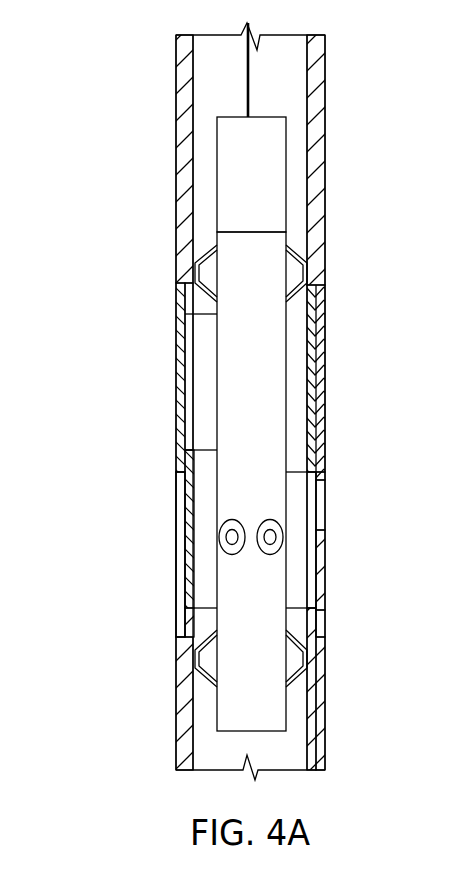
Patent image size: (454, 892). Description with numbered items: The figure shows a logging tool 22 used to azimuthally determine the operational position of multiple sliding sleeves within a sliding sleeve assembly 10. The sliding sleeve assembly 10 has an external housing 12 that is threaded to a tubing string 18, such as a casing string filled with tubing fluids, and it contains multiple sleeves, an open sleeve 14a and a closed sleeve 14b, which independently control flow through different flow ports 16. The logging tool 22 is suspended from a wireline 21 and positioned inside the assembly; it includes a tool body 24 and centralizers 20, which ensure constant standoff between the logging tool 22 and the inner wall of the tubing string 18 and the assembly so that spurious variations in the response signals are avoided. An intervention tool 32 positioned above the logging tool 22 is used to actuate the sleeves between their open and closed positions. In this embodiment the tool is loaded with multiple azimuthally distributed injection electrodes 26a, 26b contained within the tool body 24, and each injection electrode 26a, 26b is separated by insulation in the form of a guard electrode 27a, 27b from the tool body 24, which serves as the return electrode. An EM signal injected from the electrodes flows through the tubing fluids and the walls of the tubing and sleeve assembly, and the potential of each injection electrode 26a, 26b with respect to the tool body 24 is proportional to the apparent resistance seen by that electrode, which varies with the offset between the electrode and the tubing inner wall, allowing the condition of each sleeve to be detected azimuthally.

The sliding sleeve assembly 10 is at (93, 263).
The external housing 12 is at (321, 587).
The open sleeve 14a is at (322, 364).
The closed sleeve 14b is at (196, 448).
The flow ports 16 is at (181, 508).
The tubing string 18 is at (318, 712).
The centralizers 20 is at (212, 248).
The wireline 21 is at (250, 70).
The logging tool 22 is at (198, 216).
The tool body 24 is at (235, 330).
The injection electrode 26a is at (229, 537).
The injection electrode 26b is at (273, 537).
The guard electrode 27a is at (219, 555).
The guard electrode 27b is at (283, 555).
The intervention tool 32 is at (288, 150).